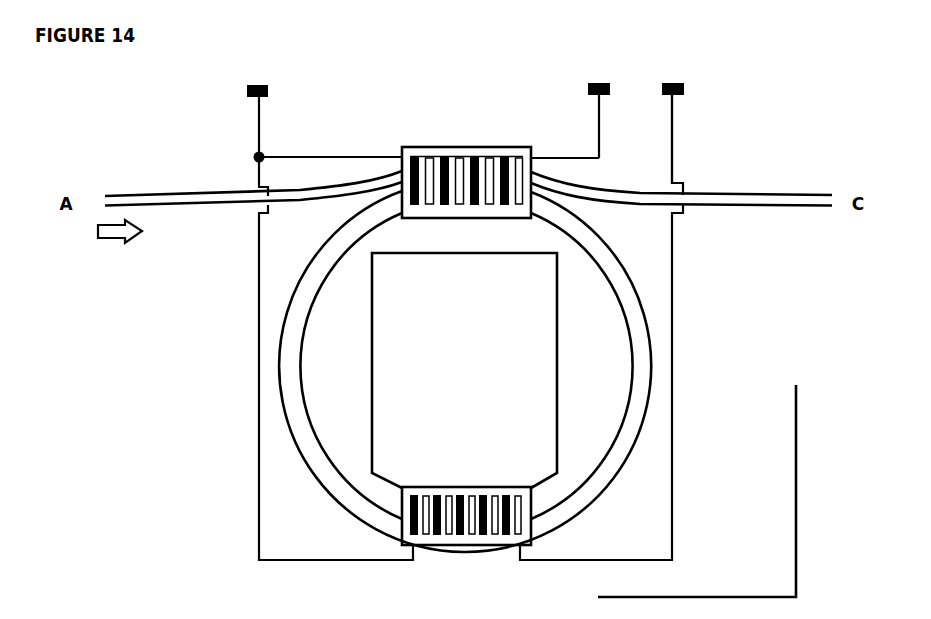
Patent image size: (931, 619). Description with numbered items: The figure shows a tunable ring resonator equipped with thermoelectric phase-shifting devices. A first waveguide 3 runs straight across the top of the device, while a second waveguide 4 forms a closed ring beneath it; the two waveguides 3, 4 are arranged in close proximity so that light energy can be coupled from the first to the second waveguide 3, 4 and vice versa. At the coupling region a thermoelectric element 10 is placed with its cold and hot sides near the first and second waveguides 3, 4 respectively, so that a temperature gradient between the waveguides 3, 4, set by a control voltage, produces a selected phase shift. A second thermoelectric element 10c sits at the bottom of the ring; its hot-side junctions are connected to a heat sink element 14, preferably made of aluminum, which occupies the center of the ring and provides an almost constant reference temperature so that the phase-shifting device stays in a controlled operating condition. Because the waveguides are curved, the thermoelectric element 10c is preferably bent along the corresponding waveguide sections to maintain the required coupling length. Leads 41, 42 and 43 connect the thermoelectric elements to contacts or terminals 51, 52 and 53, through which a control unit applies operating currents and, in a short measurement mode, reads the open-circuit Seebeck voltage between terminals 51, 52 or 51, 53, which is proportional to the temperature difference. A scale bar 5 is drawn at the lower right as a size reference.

The first waveguide 3 is at (185, 202).
The second waveguide 4 is at (636, 428).
The scale bar 5 is at (697, 491).
The thermoelectric element 10 is at (472, 157).
The thermoelectric element 10c is at (463, 531).
The heat sink element 14 is at (446, 370).
The lead 41 is at (254, 381).
The lead 42 is at (605, 155).
The right ground electrode 43 is at (677, 155).
The contact 51 is at (244, 86).
The contact 52 is at (585, 85).
The terminal 53 is at (657, 85).